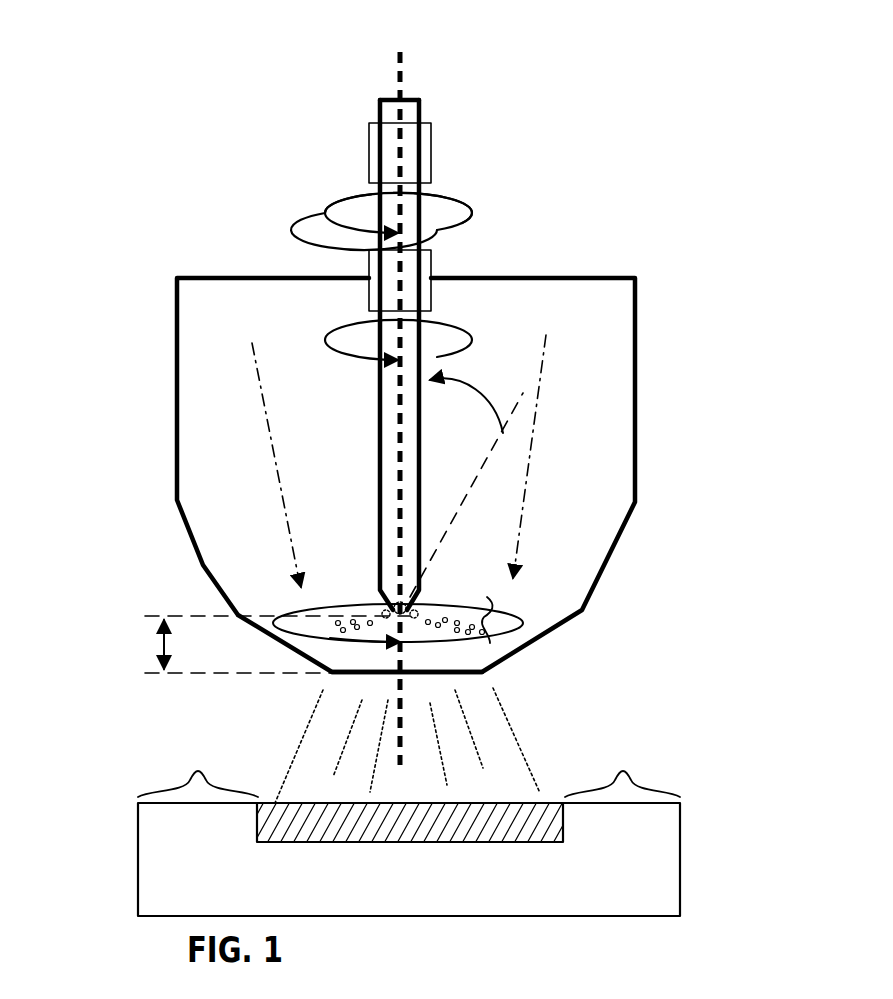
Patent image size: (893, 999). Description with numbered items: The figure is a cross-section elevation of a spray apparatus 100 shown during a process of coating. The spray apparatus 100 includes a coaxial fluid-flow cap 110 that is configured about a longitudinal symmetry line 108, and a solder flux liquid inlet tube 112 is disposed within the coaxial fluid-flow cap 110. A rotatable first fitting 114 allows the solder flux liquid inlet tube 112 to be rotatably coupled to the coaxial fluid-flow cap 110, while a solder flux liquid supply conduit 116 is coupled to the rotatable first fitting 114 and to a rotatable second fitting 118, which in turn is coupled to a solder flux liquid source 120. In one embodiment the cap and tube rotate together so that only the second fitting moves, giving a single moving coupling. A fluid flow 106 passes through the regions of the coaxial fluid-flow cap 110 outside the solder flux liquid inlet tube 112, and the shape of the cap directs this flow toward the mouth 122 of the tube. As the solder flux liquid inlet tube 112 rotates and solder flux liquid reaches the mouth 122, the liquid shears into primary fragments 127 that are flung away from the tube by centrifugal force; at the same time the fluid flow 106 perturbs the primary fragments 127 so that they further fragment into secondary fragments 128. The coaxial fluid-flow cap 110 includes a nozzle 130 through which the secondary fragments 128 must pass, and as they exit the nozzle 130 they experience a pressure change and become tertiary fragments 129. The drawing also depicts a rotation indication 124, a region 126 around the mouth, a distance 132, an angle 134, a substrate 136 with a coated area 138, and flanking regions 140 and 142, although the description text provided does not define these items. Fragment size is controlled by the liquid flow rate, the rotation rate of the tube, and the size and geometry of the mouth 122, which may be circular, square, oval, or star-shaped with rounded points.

The spray apparatus 100 is at (680, 113).
The fluid flow 106 is at (280, 447).
The longitudinal symmetry line 108 is at (397, 73).
The coaxial fluid-flow cap 110 is at (637, 440).
The solder flux liquid inlet tube 112 is at (378, 447).
The rotatable first fitting 114 is at (369, 270).
The solder flux liquid supply conduit 116 is at (422, 220).
The rotatable second fitting 118 is at (369, 165).
The solder flux liquid source 120 is at (420, 108).
The mouth 122 is at (385, 606).
The rotation arrows 124 is at (326, 213).
The atomization plane 126 is at (302, 610).
The primary fragments 127 is at (433, 605).
The secondary fragments 128 is at (500, 613).
The tertiary fragments 129 is at (523, 750).
The nozzle 130 is at (480, 675).
The distance 132 is at (160, 643).
The spray angle 134 is at (462, 383).
The substrate 136 is at (157, 870).
The deposited film 138 is at (315, 803).
The uncoated region 140 is at (198, 770).
The uncoated region 142 is at (622, 770).